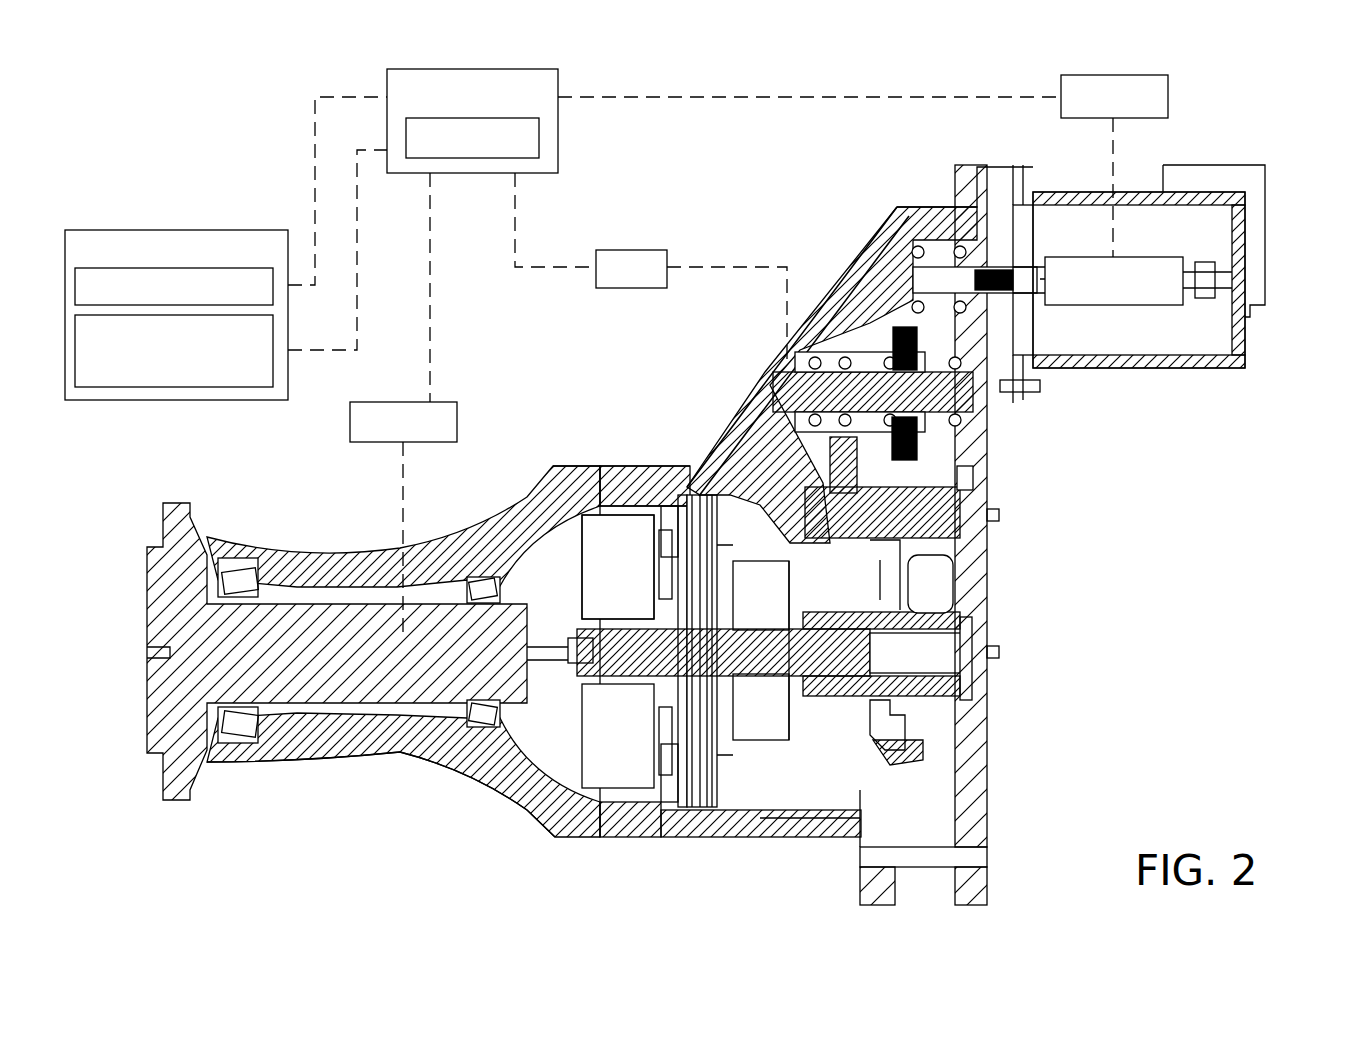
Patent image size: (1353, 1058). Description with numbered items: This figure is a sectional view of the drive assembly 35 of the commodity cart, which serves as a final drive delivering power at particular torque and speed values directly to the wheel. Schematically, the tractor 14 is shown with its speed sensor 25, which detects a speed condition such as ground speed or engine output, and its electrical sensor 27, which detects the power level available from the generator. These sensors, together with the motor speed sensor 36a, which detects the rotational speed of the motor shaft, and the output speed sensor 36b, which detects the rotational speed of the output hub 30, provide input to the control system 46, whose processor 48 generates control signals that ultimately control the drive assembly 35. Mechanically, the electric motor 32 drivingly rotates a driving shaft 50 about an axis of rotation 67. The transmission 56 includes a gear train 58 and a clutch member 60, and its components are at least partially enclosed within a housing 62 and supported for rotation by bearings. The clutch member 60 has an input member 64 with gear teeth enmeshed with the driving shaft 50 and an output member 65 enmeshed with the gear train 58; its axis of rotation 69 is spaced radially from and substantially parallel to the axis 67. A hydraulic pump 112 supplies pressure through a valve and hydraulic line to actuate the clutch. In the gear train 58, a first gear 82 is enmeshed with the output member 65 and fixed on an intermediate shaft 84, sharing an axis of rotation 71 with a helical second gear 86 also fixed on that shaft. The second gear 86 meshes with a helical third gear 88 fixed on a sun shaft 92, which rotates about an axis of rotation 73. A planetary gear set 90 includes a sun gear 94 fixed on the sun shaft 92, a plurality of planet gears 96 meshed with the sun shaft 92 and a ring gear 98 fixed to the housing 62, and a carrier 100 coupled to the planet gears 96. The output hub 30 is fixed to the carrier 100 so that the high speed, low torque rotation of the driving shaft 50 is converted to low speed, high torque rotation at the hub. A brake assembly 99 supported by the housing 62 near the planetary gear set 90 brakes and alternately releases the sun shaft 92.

The tractor 14 is at (117, 215).
The speed sensor 25 is at (241, 268).
The electrical sensor 27 is at (175, 387).
The output hub 30 is at (373, 655).
The electric motor 32 is at (1100, 215).
The drive assembly 35 is at (160, 170).
The motor speed sensor 36a is at (1168, 97).
The output speed sensor 36b is at (457, 424).
The control system 46 is at (475, 67).
The processor 48 is at (539, 138).
The driving shaft 50 is at (1013, 228).
The transmission 56 is at (927, 583).
The gear train 58 is at (872, 692).
The clutch member 60 is at (882, 343).
The housing 62 is at (720, 410).
The input member 64 is at (933, 303).
The output member 65 is at (825, 360).
The axis of rotation 67 is at (1268, 280).
The axis of rotation 69 is at (1042, 386).
The axis of rotation 71 is at (1000, 515).
The axis of rotation 73 is at (1000, 652).
The first gear 82 is at (863, 474).
The intermediate shaft 84 is at (881, 530).
The second gear 86 is at (955, 472).
The third gear 88 is at (898, 762).
The planetary gear set 90 is at (608, 540).
The sun shaft 92 is at (638, 660).
The sun gear 94 is at (620, 684).
The planet gears 96 is at (620, 512).
The ring gear 98 is at (630, 468).
The brake assembly 99 is at (730, 765).
The carrier 100 is at (570, 743).
The hydraulic pump 112 is at (630, 250).